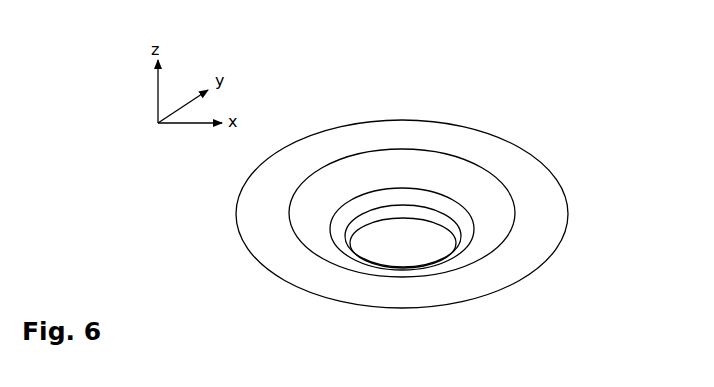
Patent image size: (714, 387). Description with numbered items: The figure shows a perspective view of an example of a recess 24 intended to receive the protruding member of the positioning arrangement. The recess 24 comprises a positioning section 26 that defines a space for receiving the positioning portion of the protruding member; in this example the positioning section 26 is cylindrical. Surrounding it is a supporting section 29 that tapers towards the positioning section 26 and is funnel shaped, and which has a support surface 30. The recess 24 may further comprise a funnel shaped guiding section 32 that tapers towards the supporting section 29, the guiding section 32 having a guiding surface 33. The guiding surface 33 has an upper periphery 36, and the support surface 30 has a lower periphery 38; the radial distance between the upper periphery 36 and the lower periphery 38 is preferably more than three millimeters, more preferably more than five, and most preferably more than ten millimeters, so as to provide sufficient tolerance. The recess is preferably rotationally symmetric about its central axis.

The recess 24 is at (258, 267).
The positioning section 26 is at (412, 255).
The supporting section 29 is at (357, 207).
The support surface 30 is at (374, 168).
The guiding section 32 is at (482, 197).
The guiding surface 33 is at (440, 133).
The upper periphery of the guiding surface 36 is at (513, 200).
The lower periphery of the support surface 38 is at (460, 235).